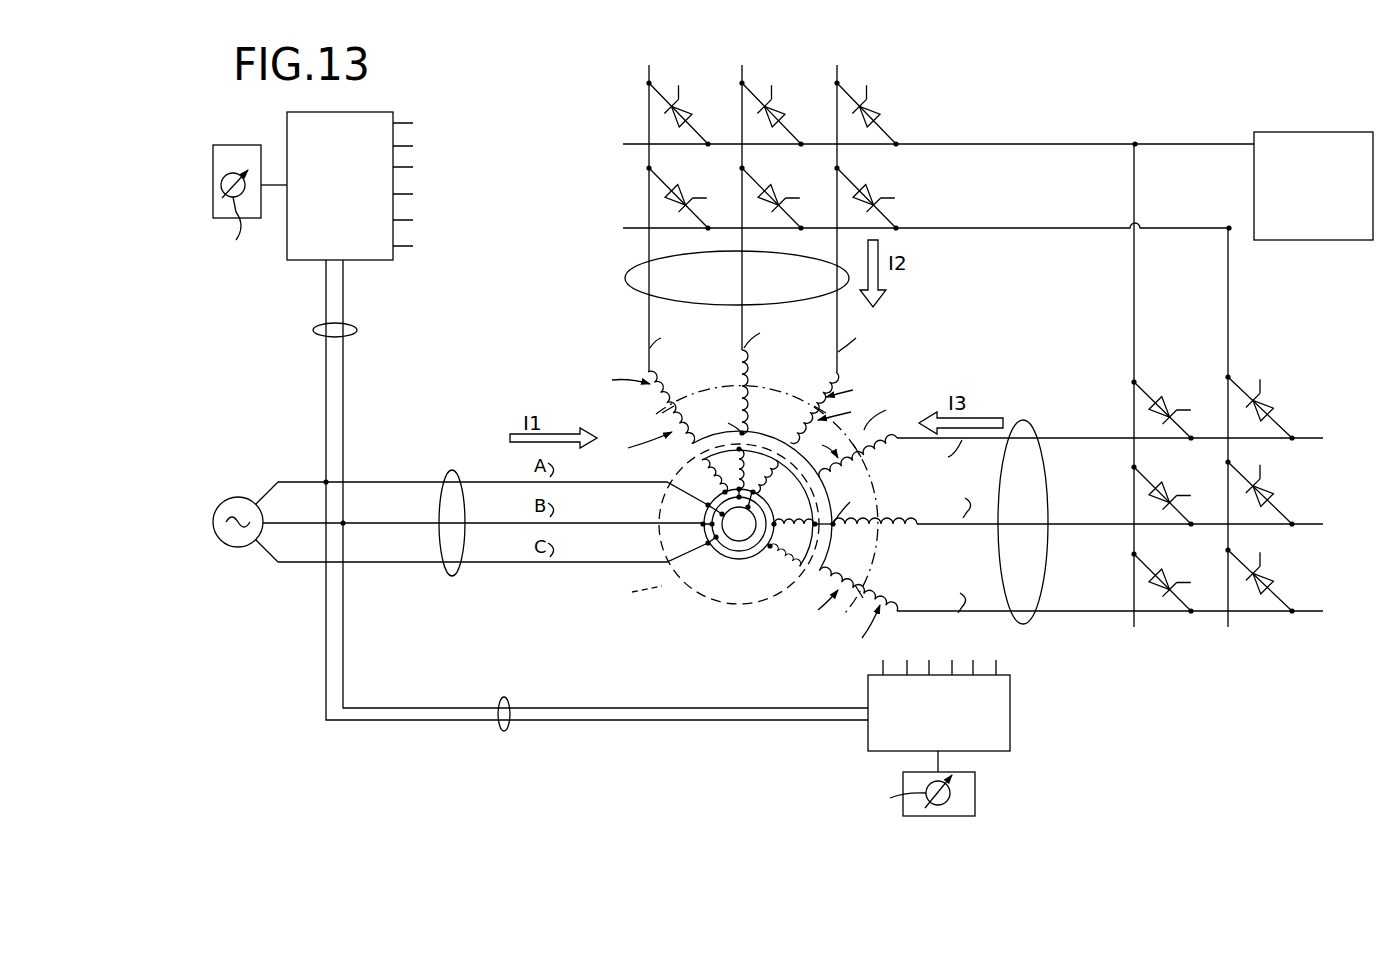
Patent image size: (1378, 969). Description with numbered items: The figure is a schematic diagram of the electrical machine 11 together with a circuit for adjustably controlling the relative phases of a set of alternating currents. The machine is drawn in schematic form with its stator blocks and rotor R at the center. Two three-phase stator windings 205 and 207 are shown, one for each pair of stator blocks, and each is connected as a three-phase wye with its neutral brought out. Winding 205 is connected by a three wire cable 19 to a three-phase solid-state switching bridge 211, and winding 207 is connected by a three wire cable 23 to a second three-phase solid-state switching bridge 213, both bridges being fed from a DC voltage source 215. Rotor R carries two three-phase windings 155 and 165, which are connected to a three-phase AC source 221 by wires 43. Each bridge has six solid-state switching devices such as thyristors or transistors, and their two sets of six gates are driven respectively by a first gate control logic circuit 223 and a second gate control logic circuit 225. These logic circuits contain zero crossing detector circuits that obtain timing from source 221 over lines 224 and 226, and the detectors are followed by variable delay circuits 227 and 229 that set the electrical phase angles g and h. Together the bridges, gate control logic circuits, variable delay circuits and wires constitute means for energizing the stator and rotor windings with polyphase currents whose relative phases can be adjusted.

The first gate control logic circuit 223 is at (370, 112).
The variable delay circuit 227 is at (257, 120).
The line 224 is at (357, 330).
The line 226 is at (506, 697).
The three-phase solid-state switching bridge 211 is at (922, 98).
The DC voltage source 215 is at (1360, 108).
The three wire cable 19 is at (625, 278).
The three-phase stator winding 205 is at (787, 385).
The electrical machine 11 is at (710, 605).
The three-phase rotor winding 165 is at (805, 555).
The three-phase rotor winding 155 is at (718, 462).
The three-phase stator winding 207 is at (897, 533).
The wires 43 is at (450, 467).
The three-phase AC source 221 is at (220, 505).
The three wire cable 23 is at (1032, 426).
The three-phase solid-state switching bridge 213 is at (1375, 372).
The second gate control logic circuit 225 is at (1010, 703).
The variable delay circuit 229 is at (976, 798).